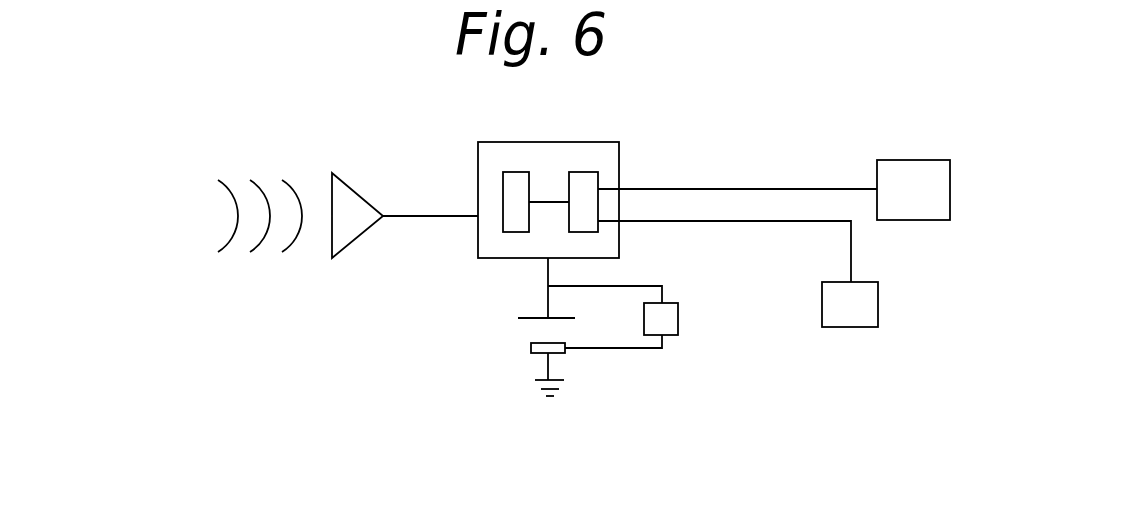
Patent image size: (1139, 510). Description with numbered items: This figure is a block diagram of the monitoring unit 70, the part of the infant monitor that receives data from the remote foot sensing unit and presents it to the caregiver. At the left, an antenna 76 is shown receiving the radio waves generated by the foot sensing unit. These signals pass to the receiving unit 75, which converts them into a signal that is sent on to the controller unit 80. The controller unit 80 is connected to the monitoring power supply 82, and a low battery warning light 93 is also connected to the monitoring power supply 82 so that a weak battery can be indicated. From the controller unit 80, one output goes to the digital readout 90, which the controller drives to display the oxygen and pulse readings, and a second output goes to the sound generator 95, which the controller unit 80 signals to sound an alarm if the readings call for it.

The monitoring unit 70 is at (957, 243).
The receiving unit 75 is at (503, 172).
The antenna 76 is at (285, 267).
The controller unit 80 is at (577, 165).
The monitoring power supply 82 is at (528, 357).
The digital readout 90 is at (892, 313).
The low battery warning light 93 is at (677, 345).
The sound generator 95 is at (953, 183).